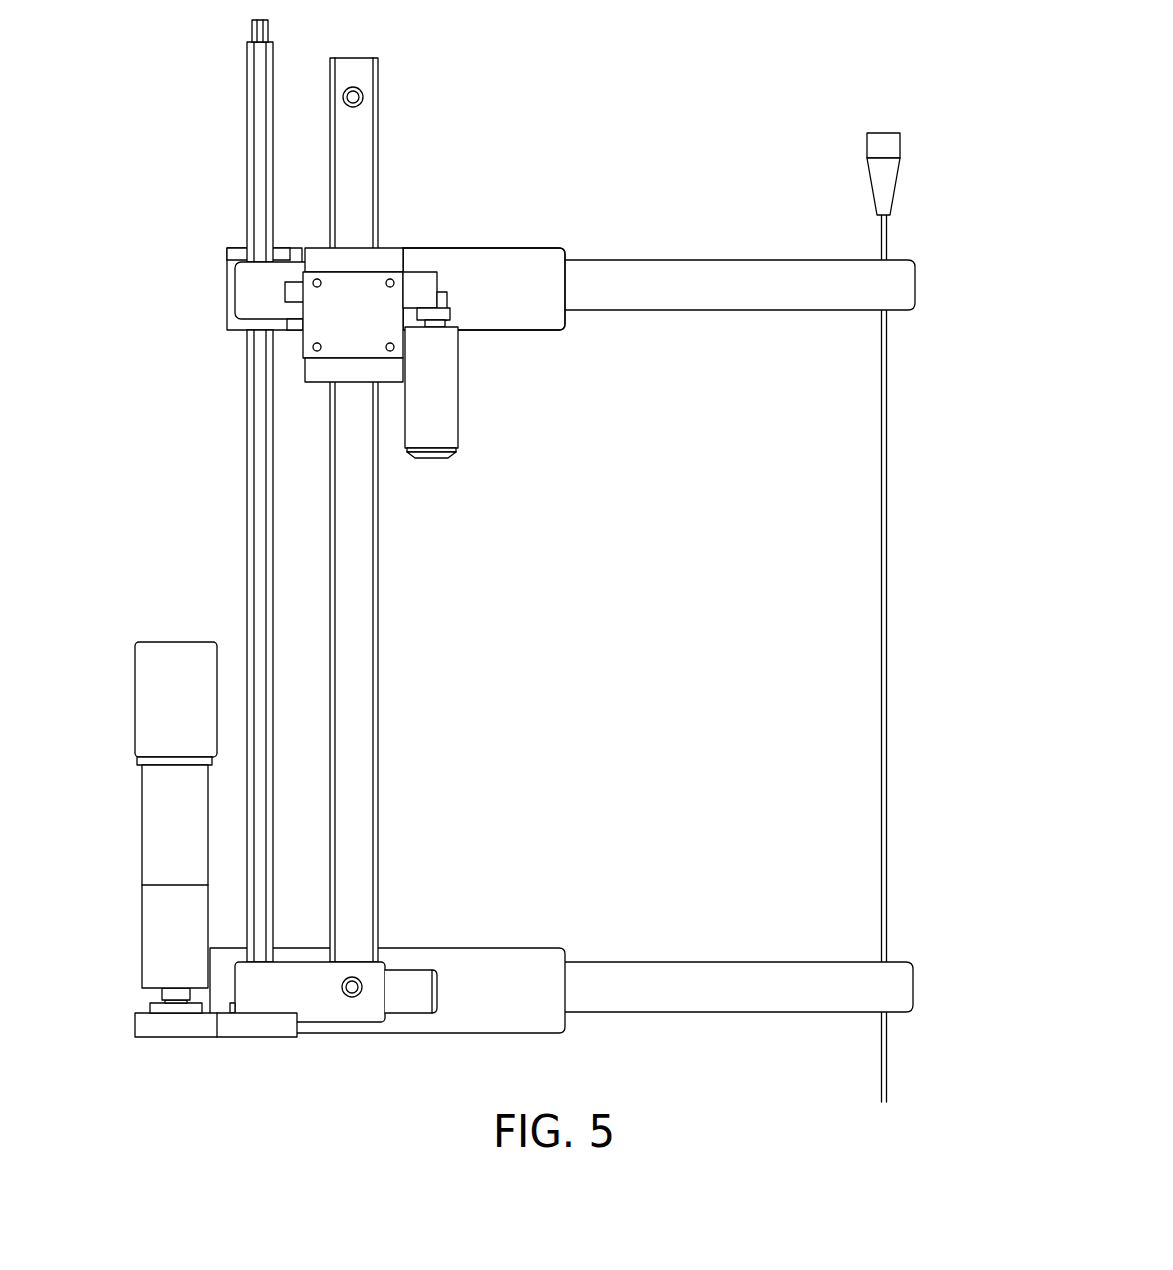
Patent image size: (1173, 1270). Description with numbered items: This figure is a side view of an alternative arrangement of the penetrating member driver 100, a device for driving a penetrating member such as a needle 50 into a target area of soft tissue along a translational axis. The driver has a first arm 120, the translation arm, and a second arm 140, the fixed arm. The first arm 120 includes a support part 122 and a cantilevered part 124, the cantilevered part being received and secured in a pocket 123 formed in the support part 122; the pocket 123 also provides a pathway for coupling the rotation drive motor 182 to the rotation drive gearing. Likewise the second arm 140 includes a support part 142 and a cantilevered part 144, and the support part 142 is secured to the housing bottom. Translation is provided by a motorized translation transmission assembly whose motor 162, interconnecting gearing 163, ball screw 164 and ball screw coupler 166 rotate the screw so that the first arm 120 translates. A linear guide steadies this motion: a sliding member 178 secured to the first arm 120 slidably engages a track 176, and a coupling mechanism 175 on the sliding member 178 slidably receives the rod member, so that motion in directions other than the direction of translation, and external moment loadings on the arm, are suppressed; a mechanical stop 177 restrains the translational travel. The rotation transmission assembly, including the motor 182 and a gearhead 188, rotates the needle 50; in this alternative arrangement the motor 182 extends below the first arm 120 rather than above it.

The needle 50 is at (887, 583).
The penetrating member driver 100 is at (897, 104).
The first arm 120 is at (704, 144).
The support part 122 is at (493, 247).
The pocket 123 is at (553, 258).
The cantilevered part 124 is at (722, 260).
The second arm 140 is at (662, 862).
The support part 142 is at (530, 947).
The cantilevered part 144 is at (712, 962).
The motor 162 is at (147, 683).
The interconnecting gearing 163 is at (187, 1028).
The ball screw 164 is at (247, 377).
The ball screw coupler 166 is at (265, 491).
The coupling mechanism 175 is at (318, 256).
The track 176 is at (357, 558).
The mechanical stop 177 is at (363, 100).
The sliding member 178 is at (388, 255).
The motor 182 is at (458, 433).
The gearhead 188 is at (450, 310).